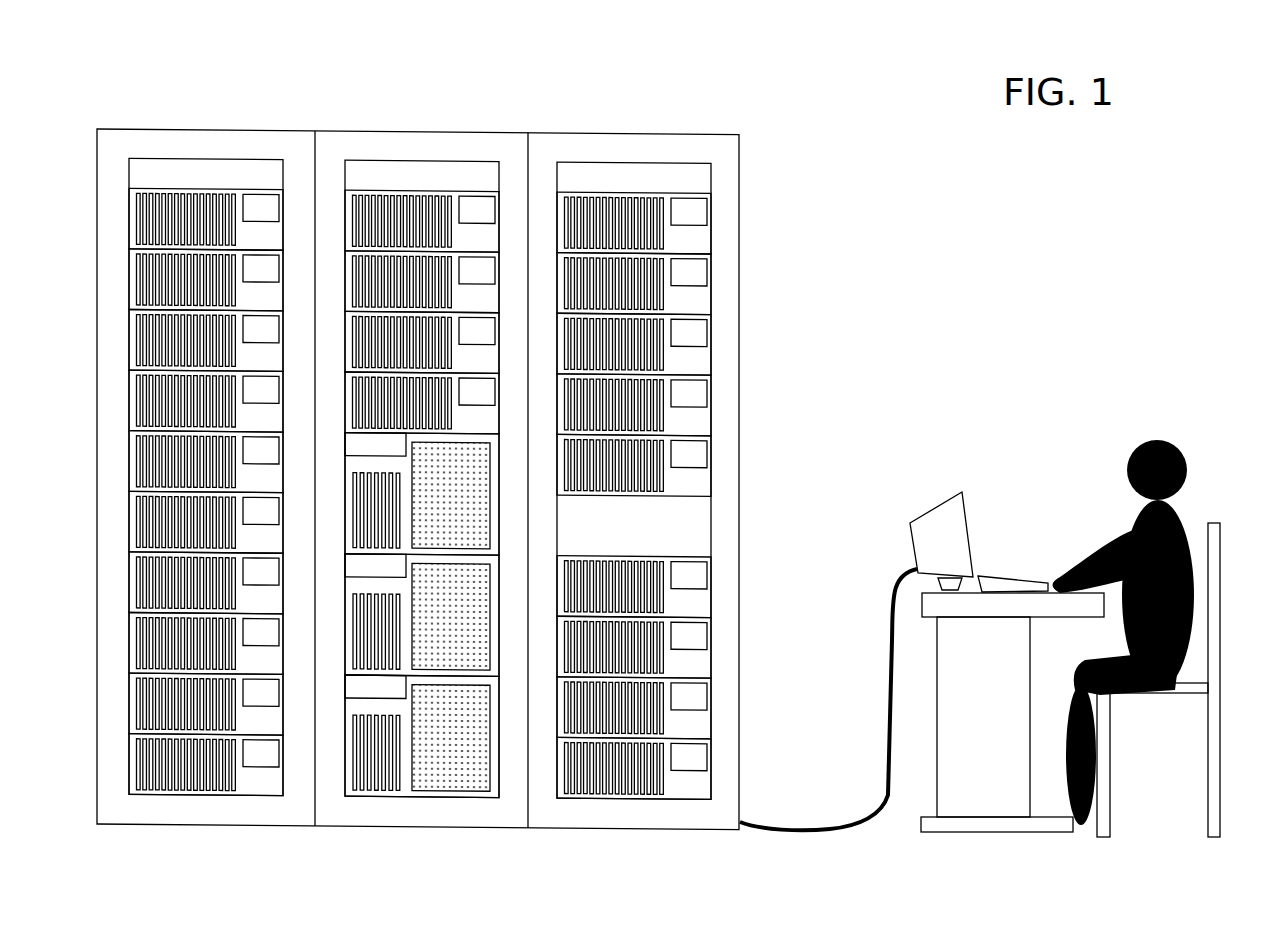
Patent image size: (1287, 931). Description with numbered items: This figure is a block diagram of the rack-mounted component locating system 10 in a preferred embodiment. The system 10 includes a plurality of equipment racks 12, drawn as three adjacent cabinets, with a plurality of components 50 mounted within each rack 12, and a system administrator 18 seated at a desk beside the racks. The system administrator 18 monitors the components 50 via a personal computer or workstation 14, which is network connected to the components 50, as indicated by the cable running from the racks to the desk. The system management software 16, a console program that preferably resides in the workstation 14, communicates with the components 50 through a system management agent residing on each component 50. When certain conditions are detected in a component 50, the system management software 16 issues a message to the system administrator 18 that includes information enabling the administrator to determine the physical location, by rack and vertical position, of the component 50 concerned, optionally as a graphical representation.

The system 10 is at (955, 236).
The equipment rack 12 is at (456, 422).
The personal computer or workstation 14 is at (979, 531).
The system management software 16 is at (941, 541).
The system administrator 18 is at (1124, 610).
The component 50 is at (727, 219).